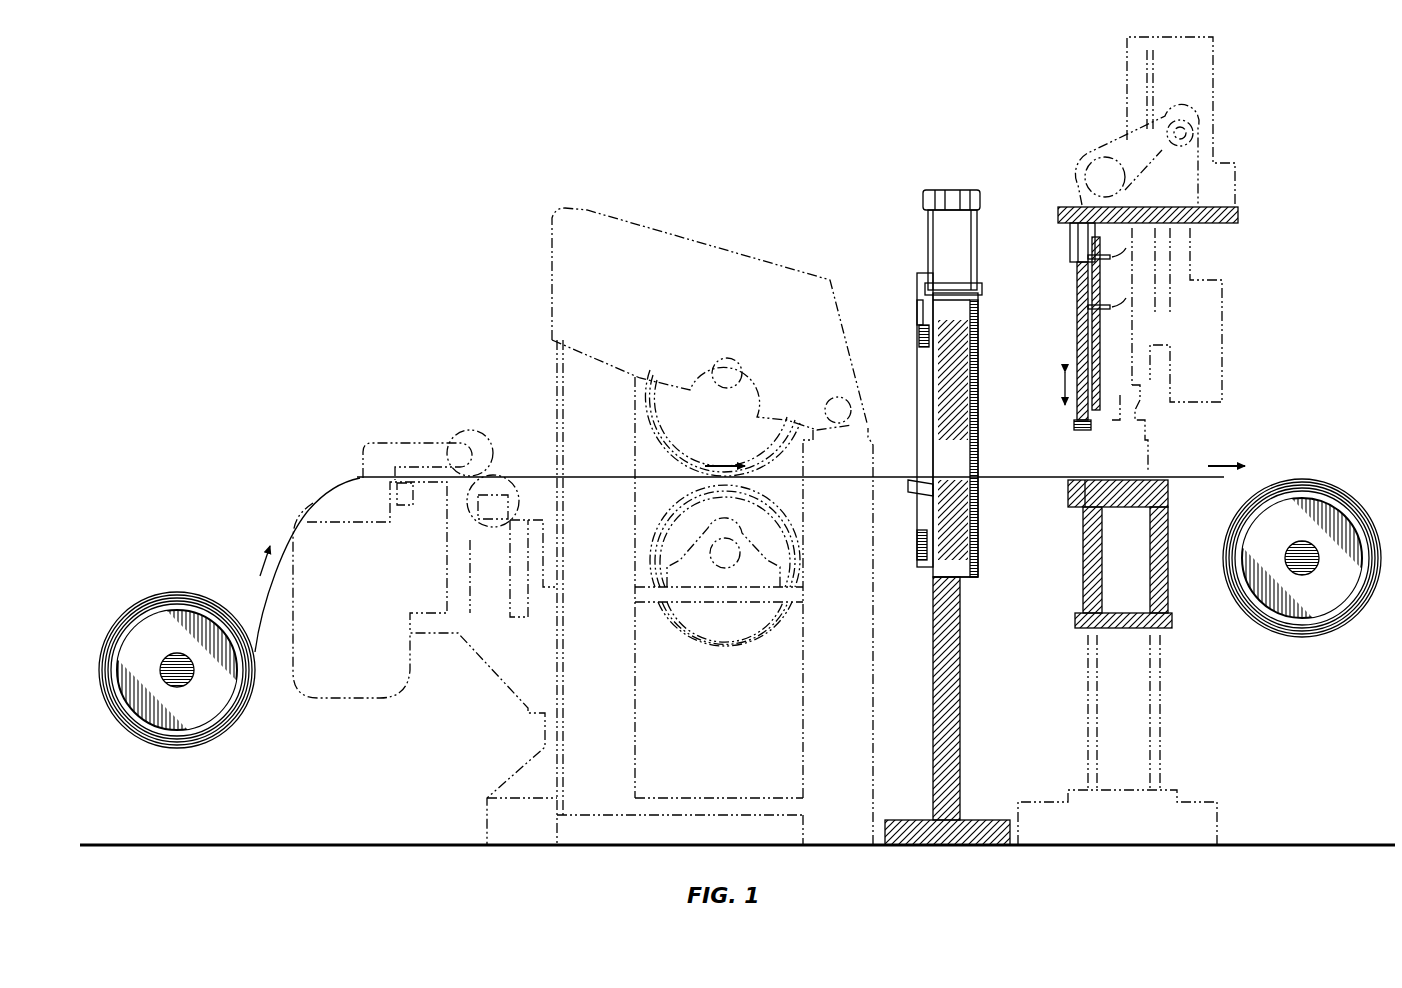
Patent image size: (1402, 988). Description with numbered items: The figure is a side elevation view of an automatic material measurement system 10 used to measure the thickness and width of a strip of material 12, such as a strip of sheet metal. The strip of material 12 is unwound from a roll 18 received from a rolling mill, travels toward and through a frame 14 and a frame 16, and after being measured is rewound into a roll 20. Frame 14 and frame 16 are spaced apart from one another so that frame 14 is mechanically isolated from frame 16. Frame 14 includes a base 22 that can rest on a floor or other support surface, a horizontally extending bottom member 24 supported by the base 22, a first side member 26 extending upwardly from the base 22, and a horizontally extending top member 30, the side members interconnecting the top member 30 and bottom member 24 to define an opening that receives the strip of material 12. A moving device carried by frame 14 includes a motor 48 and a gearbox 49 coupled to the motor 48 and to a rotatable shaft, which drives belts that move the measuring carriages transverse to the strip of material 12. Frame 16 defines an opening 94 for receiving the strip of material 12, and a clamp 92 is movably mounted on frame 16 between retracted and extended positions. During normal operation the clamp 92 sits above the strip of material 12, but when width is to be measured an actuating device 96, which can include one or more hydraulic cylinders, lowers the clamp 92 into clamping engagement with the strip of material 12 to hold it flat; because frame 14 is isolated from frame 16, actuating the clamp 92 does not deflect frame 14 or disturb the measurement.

The automatic material measurement system 10 is at (874, 158).
The strip of material 12 is at (1178, 476).
The frame 14 is at (930, 368).
The frame 16 is at (1082, 540).
The roll 18 is at (131, 590).
The roll 20 is at (1345, 478).
The base 22 is at (933, 678).
The bottom member 24 is at (955, 572).
The first side member 26 is at (955, 428).
The top member 30 is at (955, 298).
The motor 48 is at (928, 240).
The gearbox 49 is at (978, 286).
The clamp 92 is at (1075, 424).
The opening 94 is at (1090, 450).
The actuating device 96 is at (1076, 270).